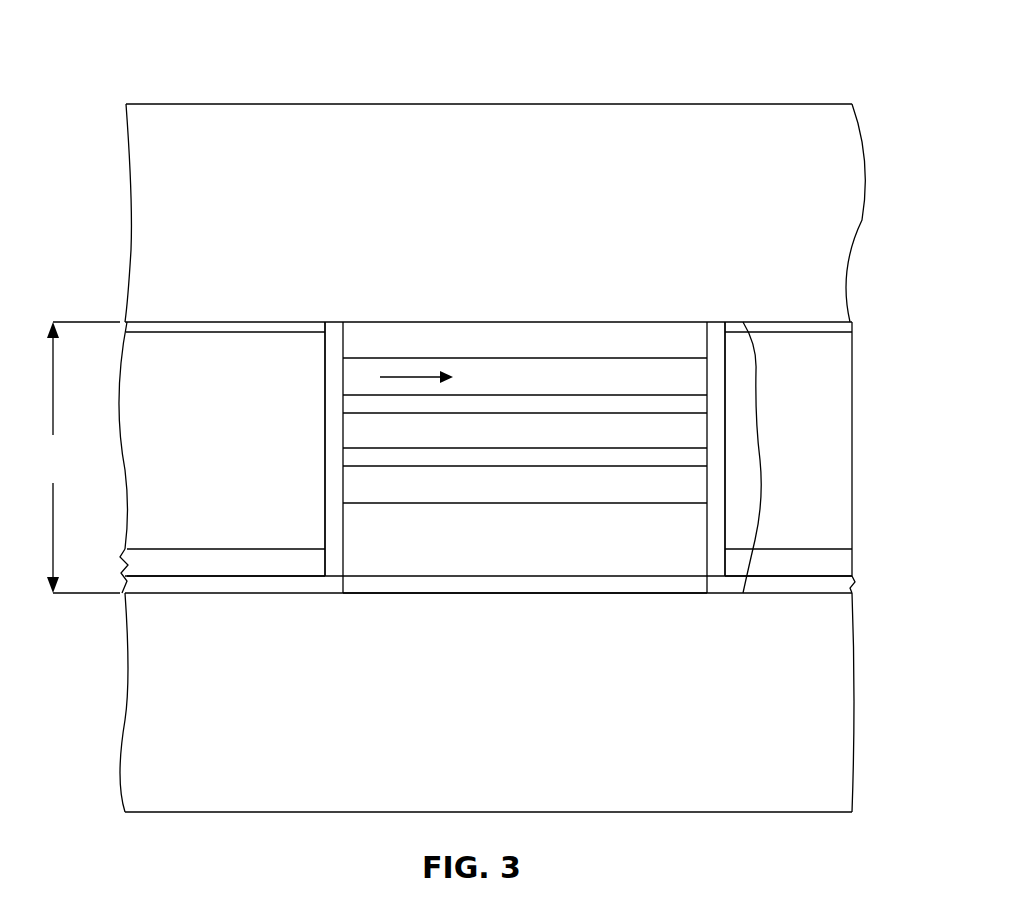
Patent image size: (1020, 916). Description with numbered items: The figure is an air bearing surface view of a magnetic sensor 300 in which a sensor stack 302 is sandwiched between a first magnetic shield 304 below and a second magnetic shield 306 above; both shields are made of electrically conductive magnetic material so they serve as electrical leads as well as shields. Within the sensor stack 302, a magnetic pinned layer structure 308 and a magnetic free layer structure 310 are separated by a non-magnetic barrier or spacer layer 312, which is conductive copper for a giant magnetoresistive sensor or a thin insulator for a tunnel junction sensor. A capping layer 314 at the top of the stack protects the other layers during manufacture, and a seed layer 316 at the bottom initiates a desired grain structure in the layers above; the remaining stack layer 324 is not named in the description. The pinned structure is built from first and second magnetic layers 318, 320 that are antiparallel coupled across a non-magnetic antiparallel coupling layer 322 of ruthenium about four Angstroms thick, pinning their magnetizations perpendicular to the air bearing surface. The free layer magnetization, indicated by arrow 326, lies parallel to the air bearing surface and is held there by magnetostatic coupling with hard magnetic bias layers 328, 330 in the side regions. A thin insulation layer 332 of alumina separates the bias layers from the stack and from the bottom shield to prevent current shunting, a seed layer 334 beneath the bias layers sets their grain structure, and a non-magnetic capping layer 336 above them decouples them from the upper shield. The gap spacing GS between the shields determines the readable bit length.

The magnetic sensor 300 is at (281, 97).
The sensor stack 302 is at (760, 365).
The first magnetic shield 304 is at (548, 698).
The second magnetic shield 306 is at (556, 214).
The magnetic pinned layer structure 308 is at (311, 503).
The magnetic free layer structure 310 is at (565, 379).
The non-magnetic barrier or spacer layer 312 is at (577, 403).
The capping layer 314 is at (567, 342).
The seed layer 316 is at (580, 590).
The first magnetic layer 318 is at (564, 487).
The second magnetic layer 320 is at (565, 432).
The non-magnetic antiparallel coupling layer 322 is at (588, 457).
The seed layer 324 is at (570, 540).
The arrow indicating free layer magnetization 326 is at (412, 373).
The hard magnetic bias layer 328 is at (774, 411).
The hard magnetic bias layer 330 is at (218, 403).
The insulation layer 332 is at (190, 583).
The seed layer 334 is at (252, 563).
The non-magnetic capping layer 336 is at (250, 328).
The gap spacing GS is at (80, 457).